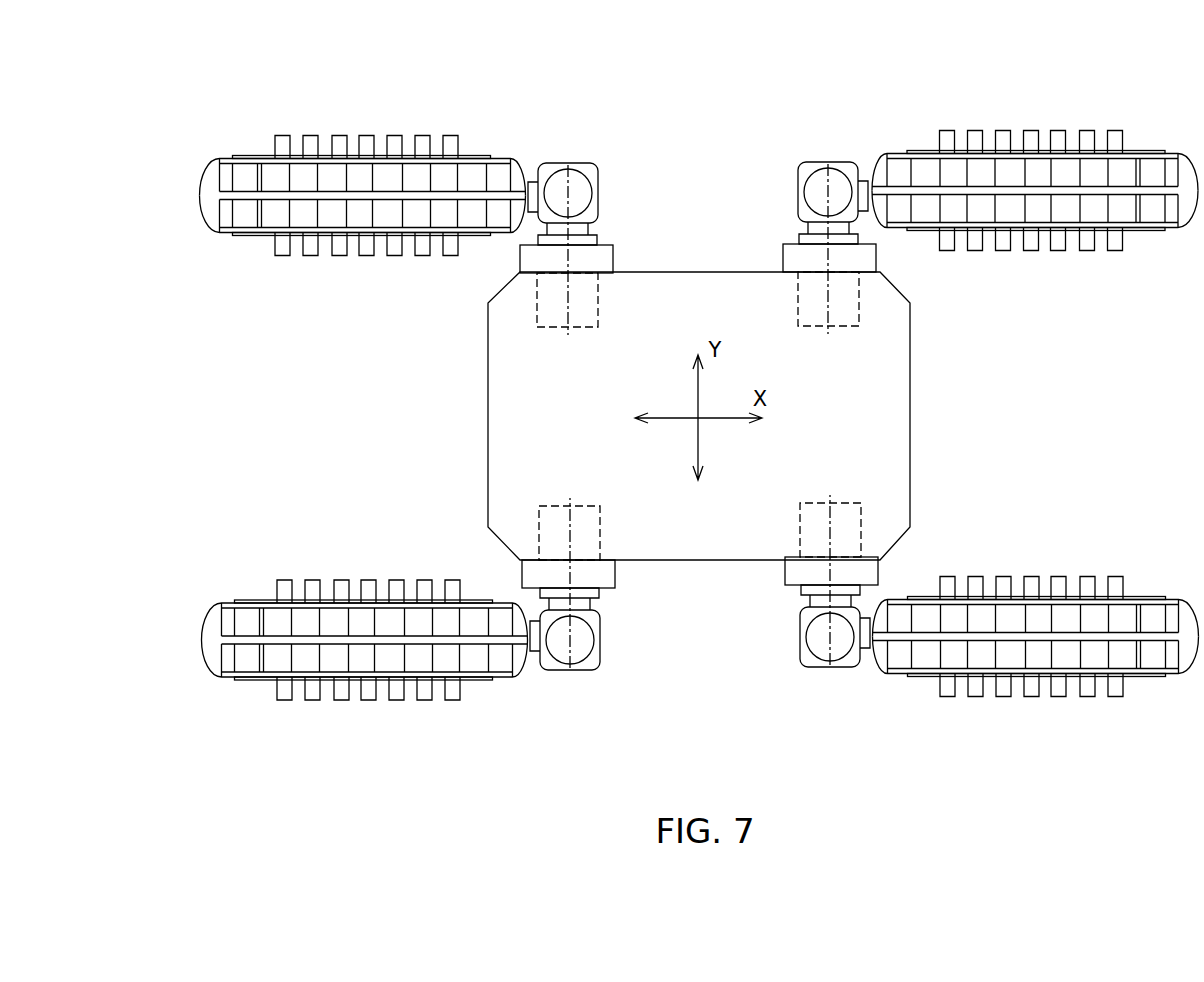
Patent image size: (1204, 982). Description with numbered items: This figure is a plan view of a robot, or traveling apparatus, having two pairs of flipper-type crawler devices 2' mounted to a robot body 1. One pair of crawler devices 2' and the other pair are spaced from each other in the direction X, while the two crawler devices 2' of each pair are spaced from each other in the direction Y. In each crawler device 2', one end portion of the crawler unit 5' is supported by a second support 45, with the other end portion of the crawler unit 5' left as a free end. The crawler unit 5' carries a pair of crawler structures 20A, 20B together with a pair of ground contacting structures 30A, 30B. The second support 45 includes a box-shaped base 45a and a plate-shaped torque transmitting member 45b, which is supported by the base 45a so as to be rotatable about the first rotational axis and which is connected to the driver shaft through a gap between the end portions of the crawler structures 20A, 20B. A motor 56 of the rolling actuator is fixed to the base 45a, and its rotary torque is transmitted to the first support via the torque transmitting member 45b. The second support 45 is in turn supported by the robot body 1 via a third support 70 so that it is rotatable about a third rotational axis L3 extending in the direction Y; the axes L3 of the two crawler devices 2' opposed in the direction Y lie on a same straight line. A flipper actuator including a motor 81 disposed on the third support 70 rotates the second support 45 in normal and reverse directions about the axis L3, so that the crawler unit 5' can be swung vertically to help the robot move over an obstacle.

The robot body 1 is at (877, 348).
The crawler device 2' is at (681, 401).
The crawler unit 5' is at (699, 376).
The crawler structure 20A is at (302, 175).
The crawler structure 20B is at (302, 223).
The ground contacting structure 30A is at (338, 126).
The ground contacting structure 30B is at (335, 264).
The second support 45 is at (585, 158).
The base 45a is at (598, 664).
The torque transmitting member 45b is at (503, 642).
The motor 56 is at (577, 189).
The third support 70 is at (600, 260).
The motor 81 is at (589, 326).
The third rotational axis L3 is at (568, 307).